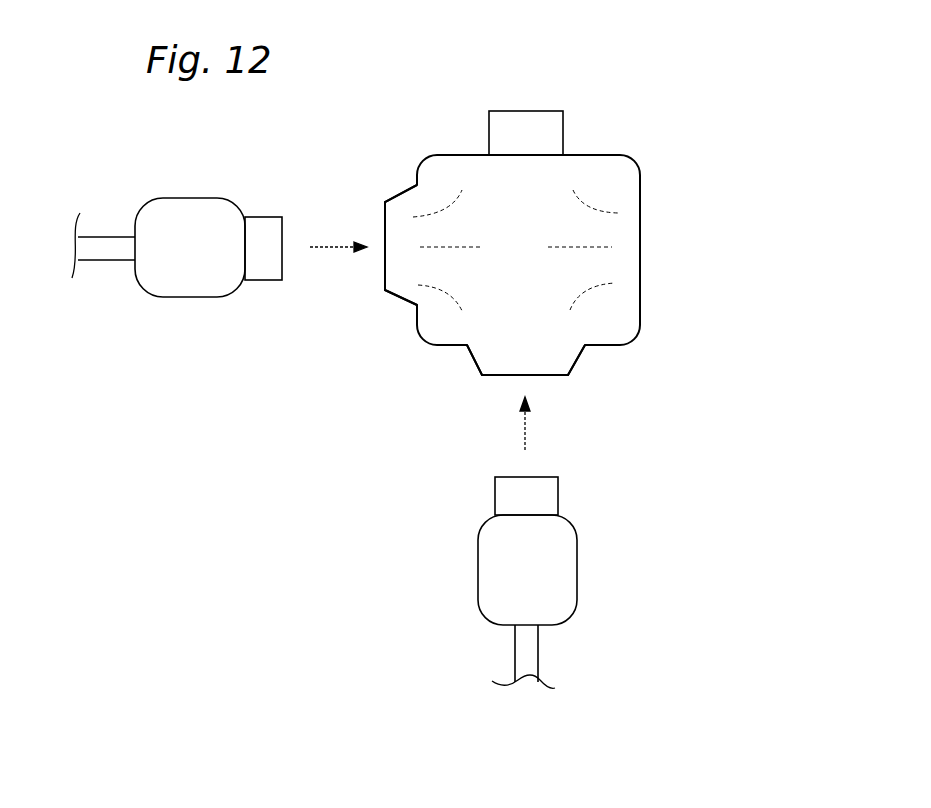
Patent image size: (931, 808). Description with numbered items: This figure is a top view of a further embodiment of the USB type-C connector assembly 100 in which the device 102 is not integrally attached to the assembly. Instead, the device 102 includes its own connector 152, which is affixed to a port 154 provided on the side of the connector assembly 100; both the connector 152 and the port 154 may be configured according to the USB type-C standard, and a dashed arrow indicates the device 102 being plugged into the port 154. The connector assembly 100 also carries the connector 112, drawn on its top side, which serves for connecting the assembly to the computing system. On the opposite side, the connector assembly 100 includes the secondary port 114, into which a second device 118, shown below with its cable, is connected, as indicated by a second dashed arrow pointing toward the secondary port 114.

The connector assembly 100 is at (625, 157).
The connector 112 is at (533, 110).
The secondary port 114 is at (545, 376).
The port 154 is at (385, 265).
The device 102 is at (112, 260).
The connector 152 is at (265, 217).
The second device 118 is at (515, 652).